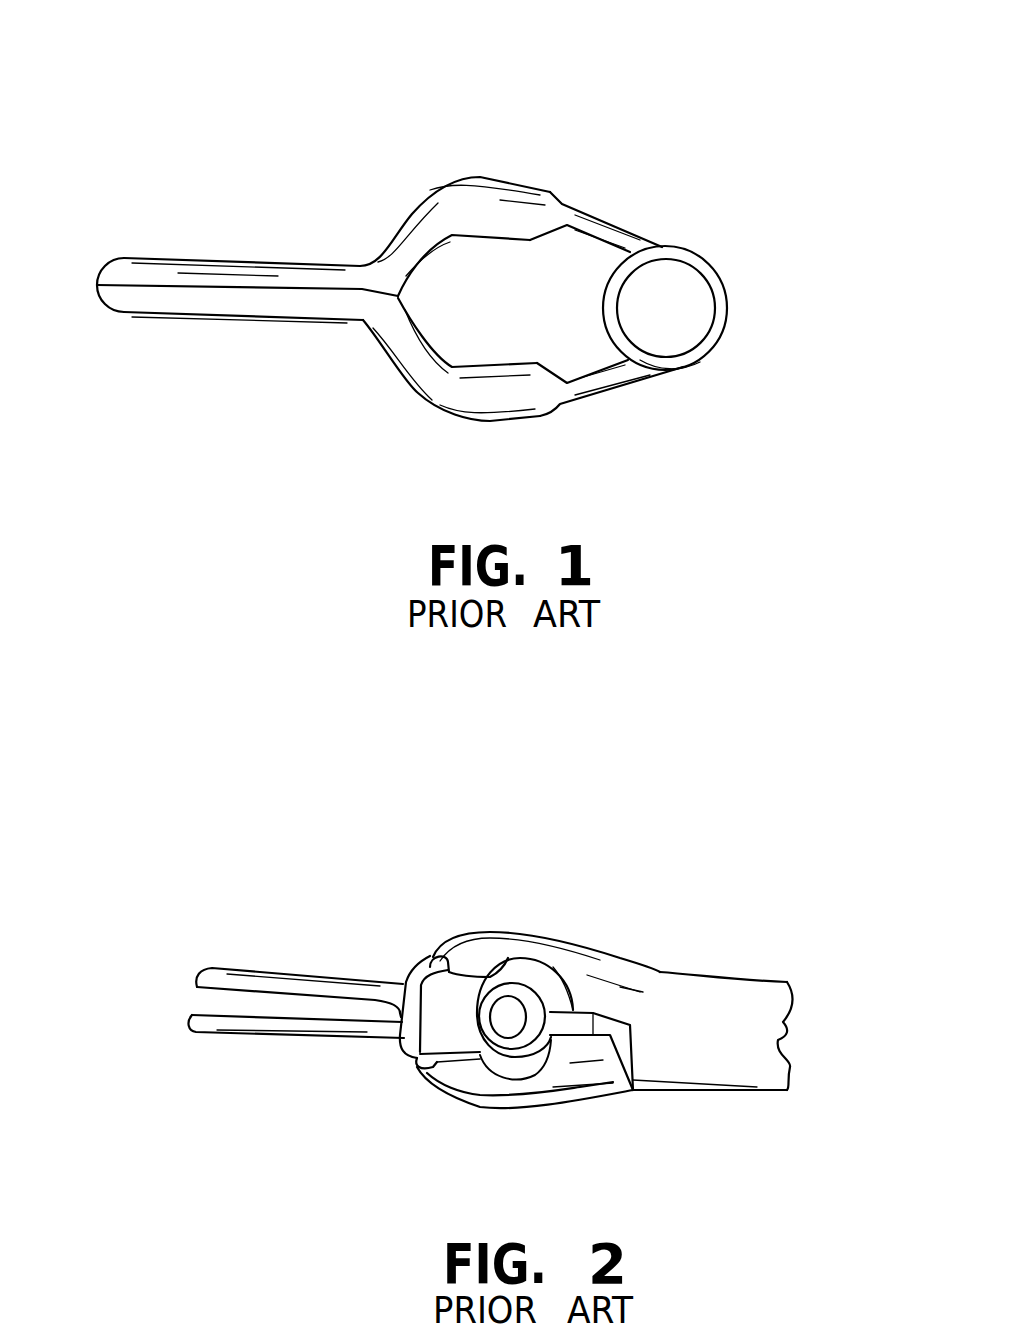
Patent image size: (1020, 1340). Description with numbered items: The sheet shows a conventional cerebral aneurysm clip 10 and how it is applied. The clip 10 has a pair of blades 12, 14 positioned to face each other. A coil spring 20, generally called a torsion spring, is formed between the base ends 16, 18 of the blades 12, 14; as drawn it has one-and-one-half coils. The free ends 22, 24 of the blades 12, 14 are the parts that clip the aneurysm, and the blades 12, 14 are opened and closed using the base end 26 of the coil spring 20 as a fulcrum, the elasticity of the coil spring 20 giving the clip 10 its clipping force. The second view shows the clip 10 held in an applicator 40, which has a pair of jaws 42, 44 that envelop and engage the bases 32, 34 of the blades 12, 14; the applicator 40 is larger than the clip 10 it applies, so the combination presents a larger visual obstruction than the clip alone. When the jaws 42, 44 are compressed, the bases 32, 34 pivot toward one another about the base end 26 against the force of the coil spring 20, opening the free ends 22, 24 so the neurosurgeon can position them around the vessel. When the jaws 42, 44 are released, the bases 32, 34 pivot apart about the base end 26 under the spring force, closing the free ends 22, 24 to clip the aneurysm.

In FIG. 1, the cerebral aneurysm clip 10 is at (328, 97).
In FIG. 1, the blade 12 is at (185, 258).
In FIG. 2, the blade 12 is at (250, 968).
In FIG. 1, the blade 14 is at (165, 302).
In FIG. 2, the blade 14 is at (262, 1035).
In FIG. 1, the base end of blade 16 is at (563, 203).
In FIG. 1, the base end of blade 18 is at (565, 403).
In FIG. 1, the coil spring 20 is at (697, 370).
In FIG. 1, the free end of blade 22 is at (103, 266).
In FIG. 1, the free end of blade 24 is at (100, 297).
In FIG. 1, the base end of coil spring 26 is at (730, 297).
In FIG. 1, the base of blade 32 is at (477, 177).
In FIG. 1, the base of blade 34 is at (455, 398).
In FIG. 2, the applicator 40 is at (797, 1028).
In FIG. 2, the jaw 42 is at (500, 945).
In FIG. 2, the jaw 44 is at (490, 1107).